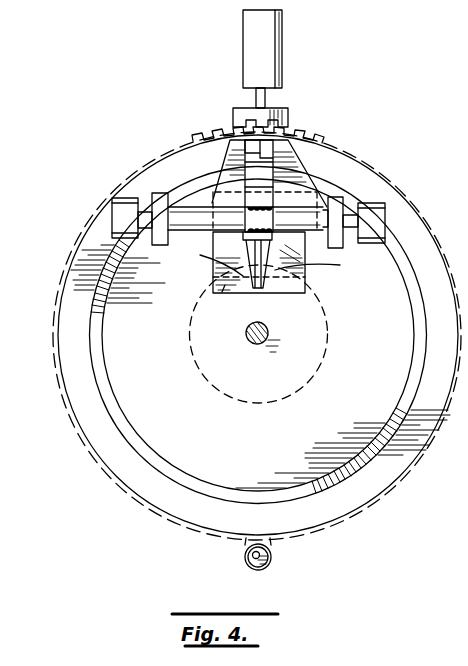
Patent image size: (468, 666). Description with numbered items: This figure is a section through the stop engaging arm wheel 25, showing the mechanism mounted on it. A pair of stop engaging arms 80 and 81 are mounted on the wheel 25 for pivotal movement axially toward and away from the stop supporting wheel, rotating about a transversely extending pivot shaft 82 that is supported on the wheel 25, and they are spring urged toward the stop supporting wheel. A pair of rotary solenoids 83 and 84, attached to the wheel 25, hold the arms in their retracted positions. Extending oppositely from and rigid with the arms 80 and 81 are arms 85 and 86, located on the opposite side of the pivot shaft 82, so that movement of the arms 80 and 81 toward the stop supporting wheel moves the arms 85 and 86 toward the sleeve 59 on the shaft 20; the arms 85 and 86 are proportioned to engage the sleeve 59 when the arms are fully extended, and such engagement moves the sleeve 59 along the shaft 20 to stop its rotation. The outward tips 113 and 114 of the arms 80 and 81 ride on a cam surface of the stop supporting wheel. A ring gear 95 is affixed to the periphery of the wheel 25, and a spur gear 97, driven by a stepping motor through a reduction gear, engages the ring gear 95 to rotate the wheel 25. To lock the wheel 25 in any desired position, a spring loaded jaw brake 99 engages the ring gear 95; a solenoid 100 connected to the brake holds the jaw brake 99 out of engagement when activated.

The solenoid 100 is at (282, 56).
The spring loaded jaw brake 99 is at (270, 115).
The outward tip 113 is at (250, 145).
The outward tip 114 is at (283, 147).
The ring gear 95 is at (340, 146).
The rotary solenoid 83 is at (121, 199).
The stop engaging arm 80 is at (212, 167).
The stop engaging arm 81 is at (311, 184).
The rotary solenoid 84 is at (383, 203).
The pivot shaft 82 is at (246, 238).
The arm 85 is at (228, 268).
The arm 86 is at (292, 262).
The sleeve 59 is at (222, 290).
The shaft 20 is at (252, 343).
The wheel 25 is at (132, 500).
The spur gear 97 is at (235, 558).